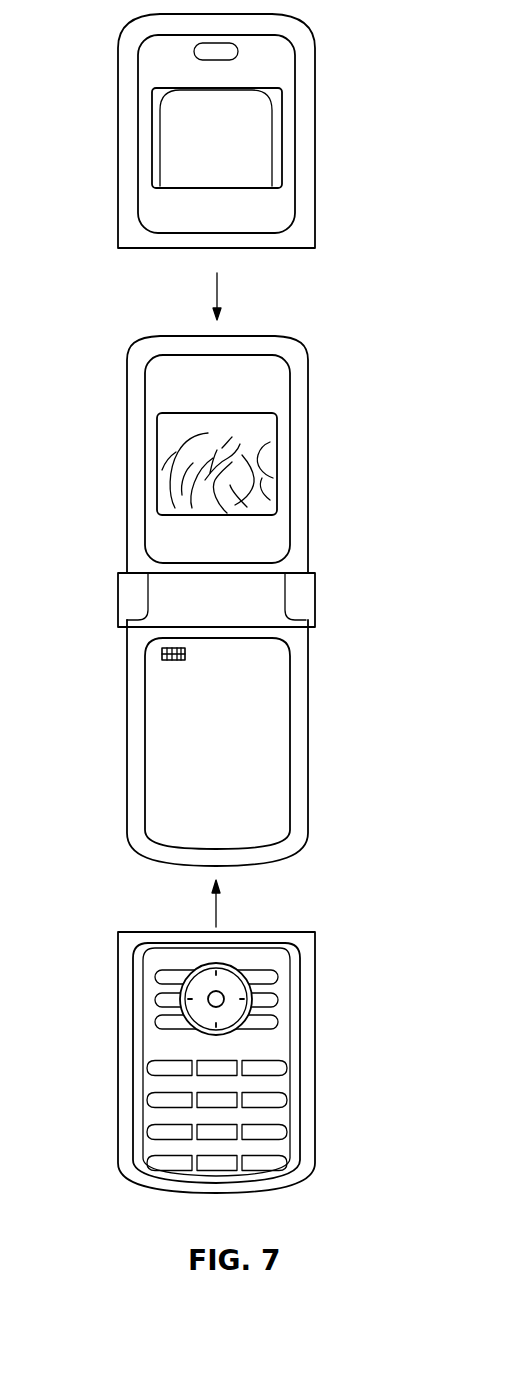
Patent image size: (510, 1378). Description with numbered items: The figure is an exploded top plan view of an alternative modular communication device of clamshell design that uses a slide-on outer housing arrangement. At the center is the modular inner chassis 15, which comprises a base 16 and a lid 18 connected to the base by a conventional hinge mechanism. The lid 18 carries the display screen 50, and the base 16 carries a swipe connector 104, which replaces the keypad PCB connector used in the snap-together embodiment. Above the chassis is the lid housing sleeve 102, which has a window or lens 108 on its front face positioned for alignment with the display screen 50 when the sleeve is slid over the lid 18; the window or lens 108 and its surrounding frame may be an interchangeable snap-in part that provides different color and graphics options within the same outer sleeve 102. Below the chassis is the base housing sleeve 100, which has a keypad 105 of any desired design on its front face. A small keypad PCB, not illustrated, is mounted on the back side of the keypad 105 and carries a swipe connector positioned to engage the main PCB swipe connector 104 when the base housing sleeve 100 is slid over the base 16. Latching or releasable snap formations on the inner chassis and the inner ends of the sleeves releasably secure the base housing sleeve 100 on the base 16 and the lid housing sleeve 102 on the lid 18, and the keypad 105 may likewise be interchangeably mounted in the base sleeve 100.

The modular inner chassis 15 is at (209, 601).
The base 16 is at (302, 758).
The lid 18 is at (302, 475).
The display screen 50 is at (167, 430).
The base housing sleeve 100 is at (308, 1065).
The lid housing sleeve 102 is at (310, 130).
The swipe connector 104 is at (172, 662).
The keypad 105 is at (150, 1068).
The window or lens 108 is at (175, 140).